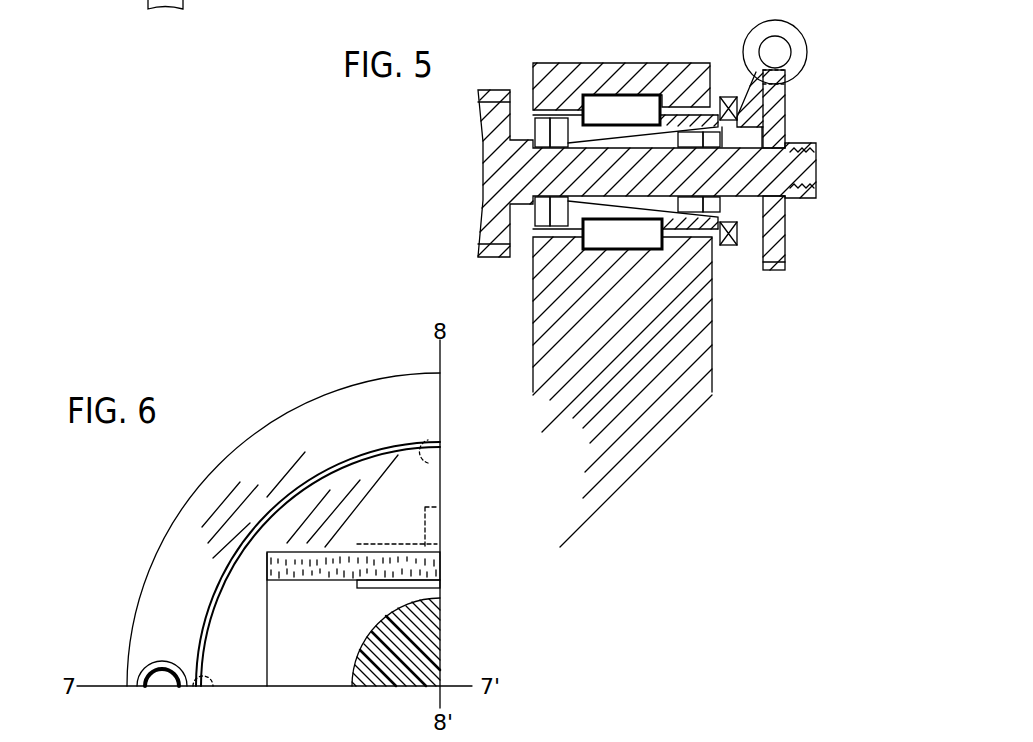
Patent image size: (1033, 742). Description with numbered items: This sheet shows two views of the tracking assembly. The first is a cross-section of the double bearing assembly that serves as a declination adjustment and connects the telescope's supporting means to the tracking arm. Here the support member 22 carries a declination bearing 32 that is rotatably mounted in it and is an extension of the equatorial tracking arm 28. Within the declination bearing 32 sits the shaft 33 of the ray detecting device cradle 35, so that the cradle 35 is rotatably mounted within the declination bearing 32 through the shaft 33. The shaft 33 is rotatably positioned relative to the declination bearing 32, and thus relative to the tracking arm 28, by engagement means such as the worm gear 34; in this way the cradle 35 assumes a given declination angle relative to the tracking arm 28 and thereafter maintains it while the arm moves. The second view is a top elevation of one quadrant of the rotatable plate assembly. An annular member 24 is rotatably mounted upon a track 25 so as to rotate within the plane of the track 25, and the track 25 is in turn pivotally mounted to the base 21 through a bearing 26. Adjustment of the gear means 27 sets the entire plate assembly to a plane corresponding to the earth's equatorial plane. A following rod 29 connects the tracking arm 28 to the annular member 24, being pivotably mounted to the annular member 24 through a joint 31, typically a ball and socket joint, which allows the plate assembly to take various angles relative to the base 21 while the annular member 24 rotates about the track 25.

In FIG. 6, the base 21 is at (410, 667).
In FIG. 5, the support member 22 is at (622, 358).
In FIG. 6, the annular member 24 is at (203, 540).
In FIG. 6, the track 25 is at (413, 502).
In FIG. 6, the bearing 26 is at (442, 598).
In FIG. 6, the gear means 27 is at (413, 583).
In FIG. 5, the equatorial tracking arm 28 is at (727, 103).
In FIG. 6, the following rod 29 is at (140, 680).
In FIG. 6, the joint 31 is at (158, 665).
In FIG. 5, the declination bearing 32 is at (667, 208).
In FIG. 5, the shaft 33 is at (558, 173).
In FIG. 5, the worm gear 34 is at (787, 102).
In FIG. 5, the ray detecting device cradle 35 is at (492, 183).